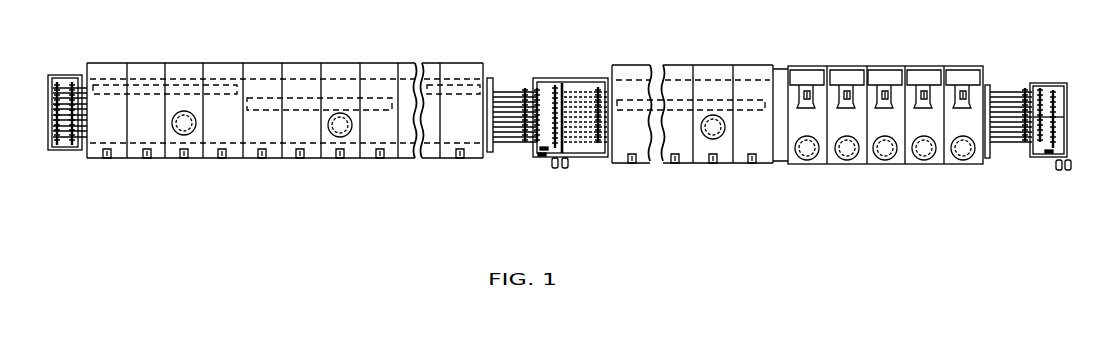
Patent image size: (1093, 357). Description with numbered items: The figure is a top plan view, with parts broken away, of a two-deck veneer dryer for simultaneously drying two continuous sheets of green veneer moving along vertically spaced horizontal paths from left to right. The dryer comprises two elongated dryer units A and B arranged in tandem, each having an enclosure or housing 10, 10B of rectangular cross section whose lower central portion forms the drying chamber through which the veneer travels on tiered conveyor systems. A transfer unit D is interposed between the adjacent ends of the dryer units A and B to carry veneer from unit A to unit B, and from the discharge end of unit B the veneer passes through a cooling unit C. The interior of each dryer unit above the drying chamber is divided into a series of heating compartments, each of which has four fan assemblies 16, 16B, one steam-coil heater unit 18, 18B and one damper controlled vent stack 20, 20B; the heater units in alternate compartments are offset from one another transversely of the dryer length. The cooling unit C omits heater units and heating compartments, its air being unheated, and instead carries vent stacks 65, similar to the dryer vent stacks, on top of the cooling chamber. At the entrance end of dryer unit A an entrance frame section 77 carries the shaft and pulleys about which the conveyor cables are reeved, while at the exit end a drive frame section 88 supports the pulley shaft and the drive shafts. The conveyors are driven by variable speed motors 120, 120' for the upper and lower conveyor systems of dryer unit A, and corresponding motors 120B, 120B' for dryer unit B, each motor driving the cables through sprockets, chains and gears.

The dryer unit A is at (196, 59).
The dryer unit B is at (684, 60).
The cooling unit C is at (857, 60).
The transfer unit D is at (576, 48).
The housing 10 is at (390, 160).
The housing 10B is at (683, 163).
The fan assemblies 16 is at (116, 165).
The fan assemblies 16B is at (754, 163).
The heater unit 18 is at (273, 98).
The heater unit 18B is at (664, 100).
The damper controlled vent stack 20 is at (186, 135).
The damper controlled vent stack 20B is at (716, 139).
The vent stack 65 is at (807, 160).
The entrance frame section 77 is at (62, 75).
The drive frame section 88 is at (535, 75).
The variable speed motor 120 is at (585, 179).
The variable speed motor 120' is at (528, 179).
The variable speed motor 120B is at (1040, 198).
The variable speed motor 120B' is at (1019, 182).